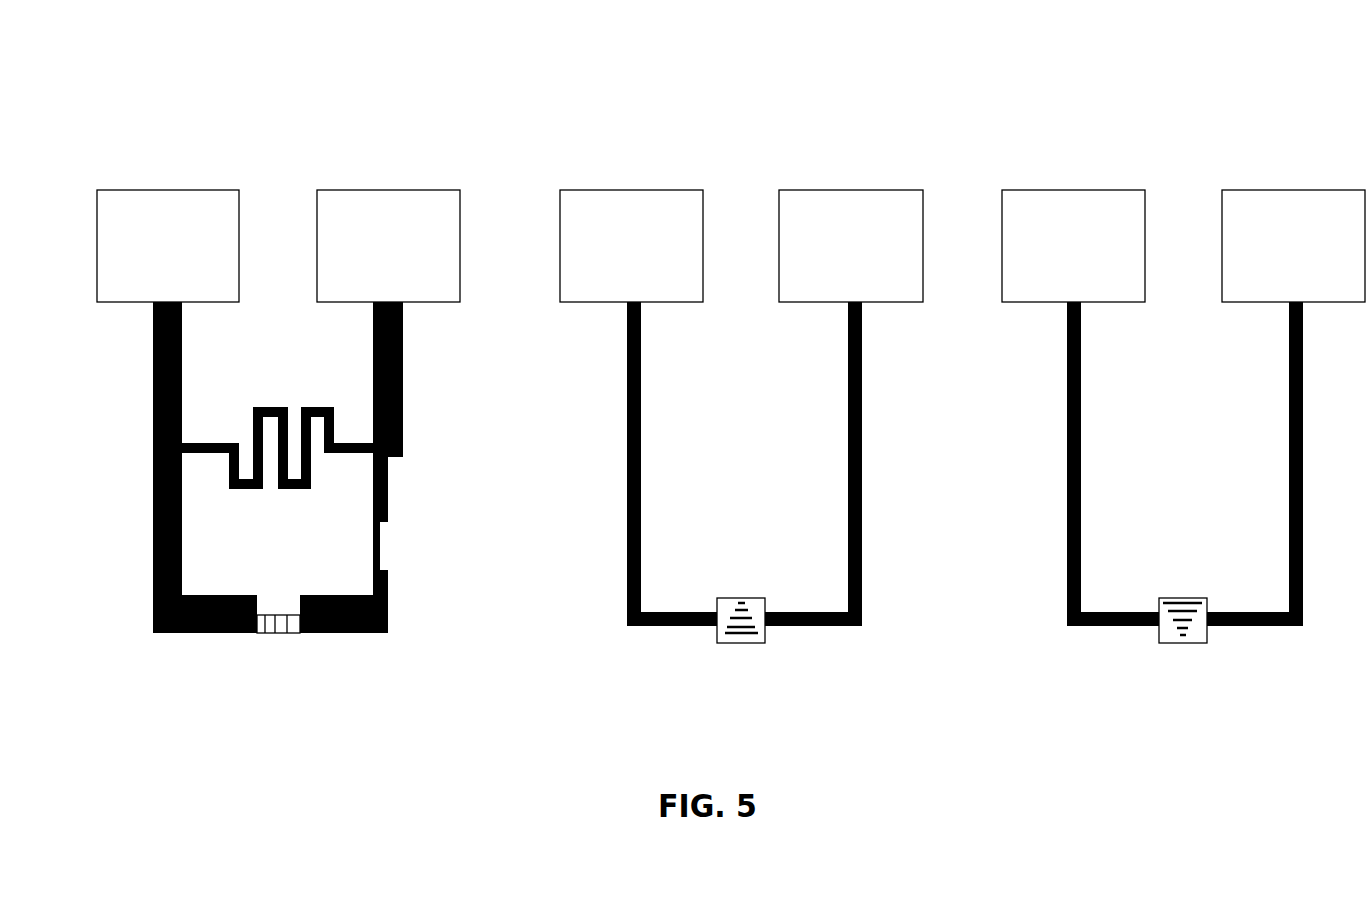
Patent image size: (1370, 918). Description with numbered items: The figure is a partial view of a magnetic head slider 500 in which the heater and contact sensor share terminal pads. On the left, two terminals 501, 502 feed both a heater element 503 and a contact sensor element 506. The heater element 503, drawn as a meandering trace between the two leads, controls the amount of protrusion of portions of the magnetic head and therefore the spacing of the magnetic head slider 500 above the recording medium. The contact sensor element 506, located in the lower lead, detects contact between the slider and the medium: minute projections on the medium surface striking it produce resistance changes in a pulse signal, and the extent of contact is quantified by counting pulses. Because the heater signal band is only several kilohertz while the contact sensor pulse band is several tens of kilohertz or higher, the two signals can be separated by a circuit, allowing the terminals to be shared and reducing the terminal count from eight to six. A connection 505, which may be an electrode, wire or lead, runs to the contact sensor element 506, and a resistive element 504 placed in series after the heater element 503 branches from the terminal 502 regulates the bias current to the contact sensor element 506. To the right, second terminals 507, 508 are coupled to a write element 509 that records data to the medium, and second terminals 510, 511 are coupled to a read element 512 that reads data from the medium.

The magnetic head slider 500 is at (622, 98).
The terminal 501 is at (168, 246).
The terminal 502 is at (388, 246).
The heater element 503 is at (270, 380).
The resistive element 504 is at (405, 546).
The connection 505 is at (128, 408).
The contact sensor element 506 is at (276, 596).
The second terminal 507 is at (631, 246).
The second terminal 508 is at (851, 246).
The write element 509 is at (740, 643).
The second terminal 510 is at (1073, 246).
The second terminal 511 is at (1293, 246).
The read element 512 is at (1182, 643).